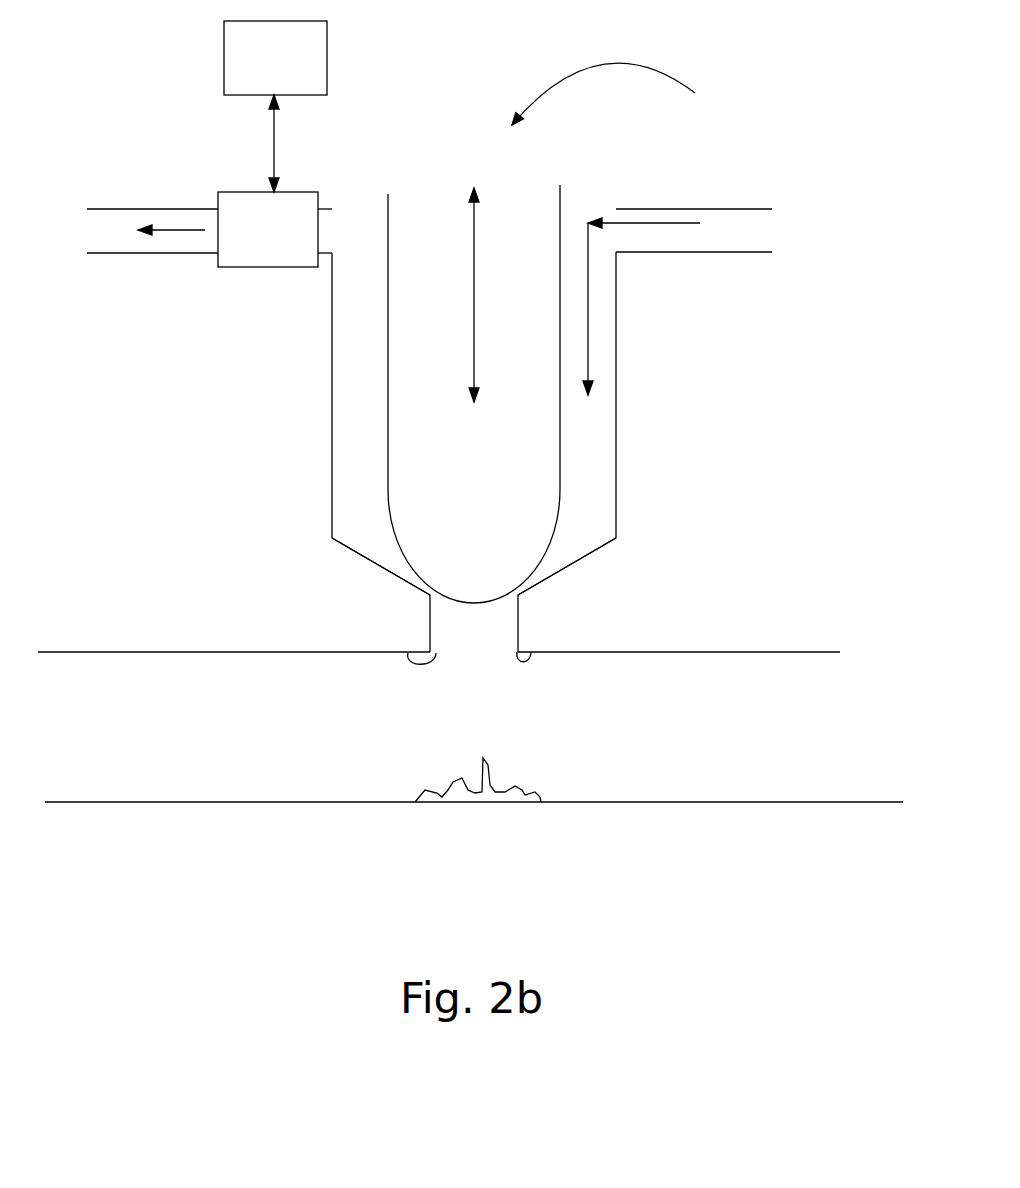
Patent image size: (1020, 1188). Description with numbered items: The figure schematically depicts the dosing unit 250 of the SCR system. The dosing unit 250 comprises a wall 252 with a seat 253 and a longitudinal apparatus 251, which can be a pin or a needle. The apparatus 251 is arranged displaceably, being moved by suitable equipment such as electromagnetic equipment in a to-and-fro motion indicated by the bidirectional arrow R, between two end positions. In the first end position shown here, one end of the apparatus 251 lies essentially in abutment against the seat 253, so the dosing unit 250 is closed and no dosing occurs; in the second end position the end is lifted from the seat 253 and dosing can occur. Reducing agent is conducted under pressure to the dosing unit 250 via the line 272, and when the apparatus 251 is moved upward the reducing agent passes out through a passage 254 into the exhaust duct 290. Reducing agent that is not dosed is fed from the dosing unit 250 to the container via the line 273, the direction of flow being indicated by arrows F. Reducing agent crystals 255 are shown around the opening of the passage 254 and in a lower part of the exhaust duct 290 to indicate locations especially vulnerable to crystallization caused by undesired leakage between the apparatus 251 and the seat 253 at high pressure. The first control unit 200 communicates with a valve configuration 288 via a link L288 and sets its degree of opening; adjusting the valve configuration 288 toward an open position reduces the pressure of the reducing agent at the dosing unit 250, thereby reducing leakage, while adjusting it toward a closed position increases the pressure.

The first control unit 200 is at (275, 58).
The valve configuration 288 is at (268, 229).
The link L288 is at (273, 147).
The line 273 is at (150, 253).
The line 272 is at (727, 252).
The wall 252 is at (617, 368).
The longitudinal apparatus 251 is at (560, 203).
The dosing unit 250 is at (631, 94).
The seat 253 is at (593, 555).
The passage 254 is at (430, 632).
The reducing agent crystals 255 is at (415, 664).
The exhaust duct 290 is at (875, 802).